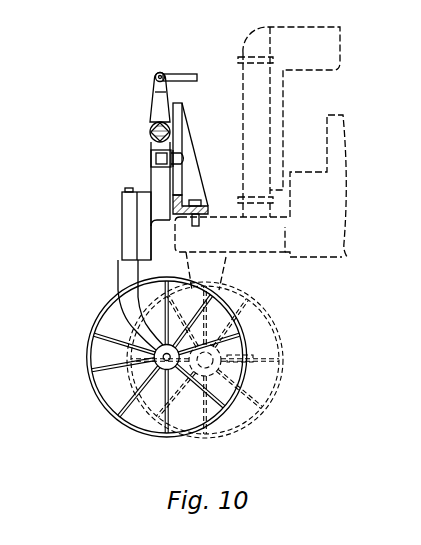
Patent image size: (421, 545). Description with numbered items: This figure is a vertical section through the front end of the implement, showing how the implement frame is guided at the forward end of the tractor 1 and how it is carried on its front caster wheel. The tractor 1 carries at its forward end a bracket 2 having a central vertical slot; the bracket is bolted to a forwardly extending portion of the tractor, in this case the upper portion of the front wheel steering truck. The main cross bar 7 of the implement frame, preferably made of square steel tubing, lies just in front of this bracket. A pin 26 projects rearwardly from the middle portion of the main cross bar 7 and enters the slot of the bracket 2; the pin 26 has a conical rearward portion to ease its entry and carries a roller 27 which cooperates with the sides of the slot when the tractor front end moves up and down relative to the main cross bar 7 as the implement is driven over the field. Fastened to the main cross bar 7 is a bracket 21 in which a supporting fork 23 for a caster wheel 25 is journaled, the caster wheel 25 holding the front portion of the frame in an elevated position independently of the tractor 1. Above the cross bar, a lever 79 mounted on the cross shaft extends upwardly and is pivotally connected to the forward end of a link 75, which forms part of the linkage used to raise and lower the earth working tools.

The tractor 1 is at (344, 250).
The bracket 2 is at (179, 104).
The main cross bar 7 is at (152, 158).
The bracket 21 is at (122, 205).
The supporting fork 23 is at (122, 267).
The caster wheel 25 is at (89, 343).
The pin 26 is at (184, 157).
The roller 27 is at (176, 152).
The link 75 is at (182, 74).
The lever 79 is at (156, 104).